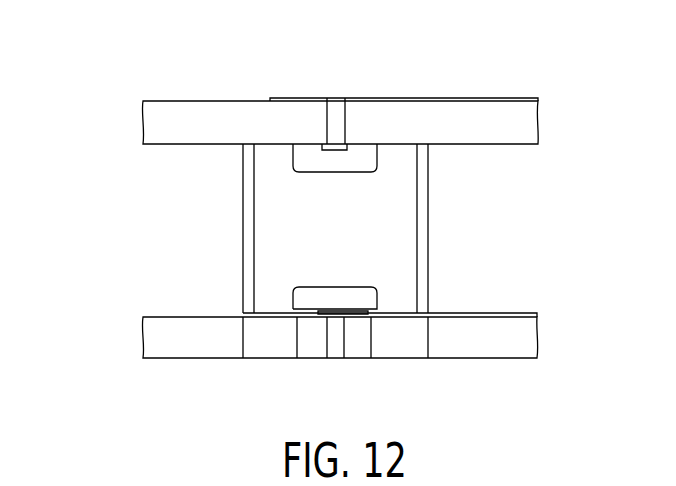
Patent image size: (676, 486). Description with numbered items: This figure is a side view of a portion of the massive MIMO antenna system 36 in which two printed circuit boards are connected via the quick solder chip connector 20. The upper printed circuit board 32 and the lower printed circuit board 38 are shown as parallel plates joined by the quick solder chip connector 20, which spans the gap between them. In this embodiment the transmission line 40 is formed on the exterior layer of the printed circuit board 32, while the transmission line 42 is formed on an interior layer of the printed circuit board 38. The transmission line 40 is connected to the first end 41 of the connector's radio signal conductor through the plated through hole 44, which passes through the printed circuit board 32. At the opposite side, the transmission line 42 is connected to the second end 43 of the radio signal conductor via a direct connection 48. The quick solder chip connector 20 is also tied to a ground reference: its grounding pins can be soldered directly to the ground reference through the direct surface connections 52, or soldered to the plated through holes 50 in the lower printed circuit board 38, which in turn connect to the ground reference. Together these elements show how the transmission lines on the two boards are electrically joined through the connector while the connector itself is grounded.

The massive MIMO antenna system 36 is at (179, 79).
The printed circuit board 32 is at (165, 124).
The printed circuit board 38 is at (157, 343).
The transmission line 40 is at (538, 98).
The transmission line 42 is at (537, 313).
The plated through hole 44 is at (342, 108).
The first end 41 is at (373, 147).
The second end 43 is at (367, 312).
The direct connection 48 is at (300, 312).
The direct surface connections 52 is at (250, 146).
The quick solder chip connector 20 is at (262, 252).
The plated through holes 50 is at (277, 361).